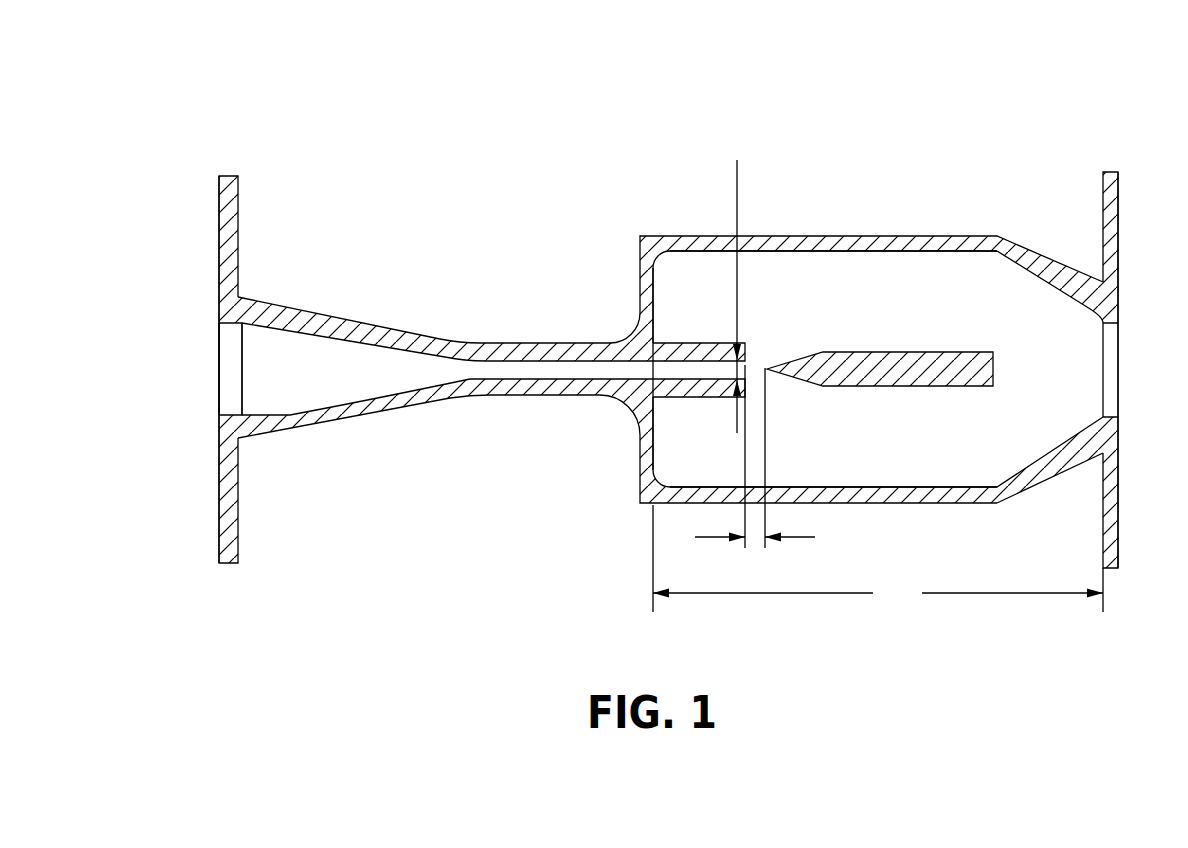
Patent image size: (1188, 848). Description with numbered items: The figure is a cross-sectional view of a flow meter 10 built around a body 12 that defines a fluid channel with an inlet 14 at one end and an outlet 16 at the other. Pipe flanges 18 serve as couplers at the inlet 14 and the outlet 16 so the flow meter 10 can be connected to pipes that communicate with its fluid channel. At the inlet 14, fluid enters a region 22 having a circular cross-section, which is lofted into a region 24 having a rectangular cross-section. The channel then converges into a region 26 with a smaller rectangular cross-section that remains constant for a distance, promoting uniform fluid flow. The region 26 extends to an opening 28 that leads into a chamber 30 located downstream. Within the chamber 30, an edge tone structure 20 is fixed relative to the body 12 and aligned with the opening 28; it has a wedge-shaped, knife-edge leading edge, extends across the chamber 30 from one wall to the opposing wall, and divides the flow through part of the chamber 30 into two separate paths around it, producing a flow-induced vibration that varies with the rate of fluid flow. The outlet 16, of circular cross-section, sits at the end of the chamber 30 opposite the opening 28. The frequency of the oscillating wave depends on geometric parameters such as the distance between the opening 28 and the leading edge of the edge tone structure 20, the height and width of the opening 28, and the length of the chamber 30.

The flow meter 10 is at (990, 107).
The body 12 is at (640, 247).
The inlet 14 is at (208, 362).
The outlet 16 is at (1124, 366).
The pipe flanges 18 is at (228, 212).
The edge tone structure 20 is at (906, 370).
The region with circular cross-section 22 is at (228, 400).
The region with rectangular shaped cross-section 24 is at (335, 372).
The region with smaller rectangular cross-section 26 is at (537, 372).
The opening 28 is at (750, 366).
The chamber 30 is at (889, 456).